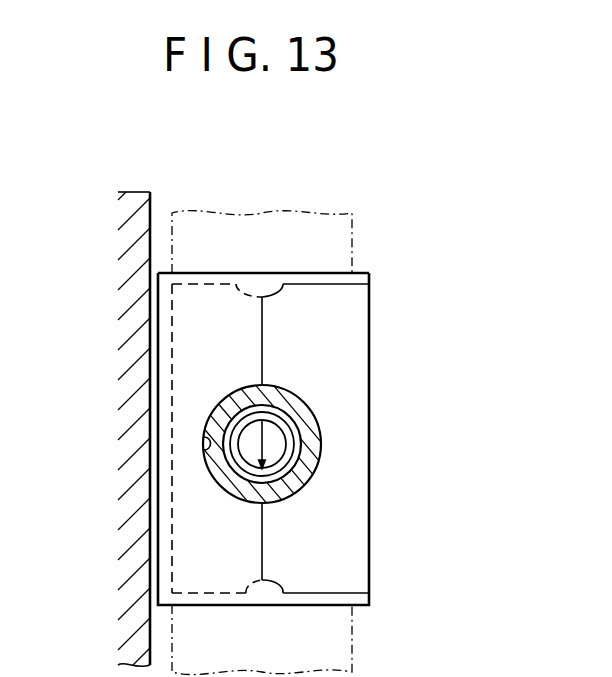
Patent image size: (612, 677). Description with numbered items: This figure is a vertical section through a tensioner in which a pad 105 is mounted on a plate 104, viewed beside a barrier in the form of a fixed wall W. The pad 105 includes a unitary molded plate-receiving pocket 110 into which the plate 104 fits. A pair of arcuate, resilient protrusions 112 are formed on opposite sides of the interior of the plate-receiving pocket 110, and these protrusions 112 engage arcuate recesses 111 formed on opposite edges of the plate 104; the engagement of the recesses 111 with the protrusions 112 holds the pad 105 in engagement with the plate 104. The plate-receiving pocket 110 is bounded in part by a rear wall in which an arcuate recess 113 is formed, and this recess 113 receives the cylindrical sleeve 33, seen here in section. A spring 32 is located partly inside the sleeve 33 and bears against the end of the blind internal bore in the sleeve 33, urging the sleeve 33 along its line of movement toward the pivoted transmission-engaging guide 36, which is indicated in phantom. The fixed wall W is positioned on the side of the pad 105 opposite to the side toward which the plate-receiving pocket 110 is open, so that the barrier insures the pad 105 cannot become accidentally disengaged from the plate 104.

The fixed wall W is at (147, 188).
The transmission-engaging guide 36 is at (356, 225).
The plate 104 is at (378, 367).
The pad 105 is at (380, 276).
The plate-receiving pocket 110 is at (266, 376).
The arcuate recesses 111 is at (292, 316).
The arcuate resilient protrusions 112 is at (292, 316).
The arcuate recess 113 is at (204, 444).
The cylindrical sleeve 33 is at (332, 430).
The spring 32 is at (293, 452).